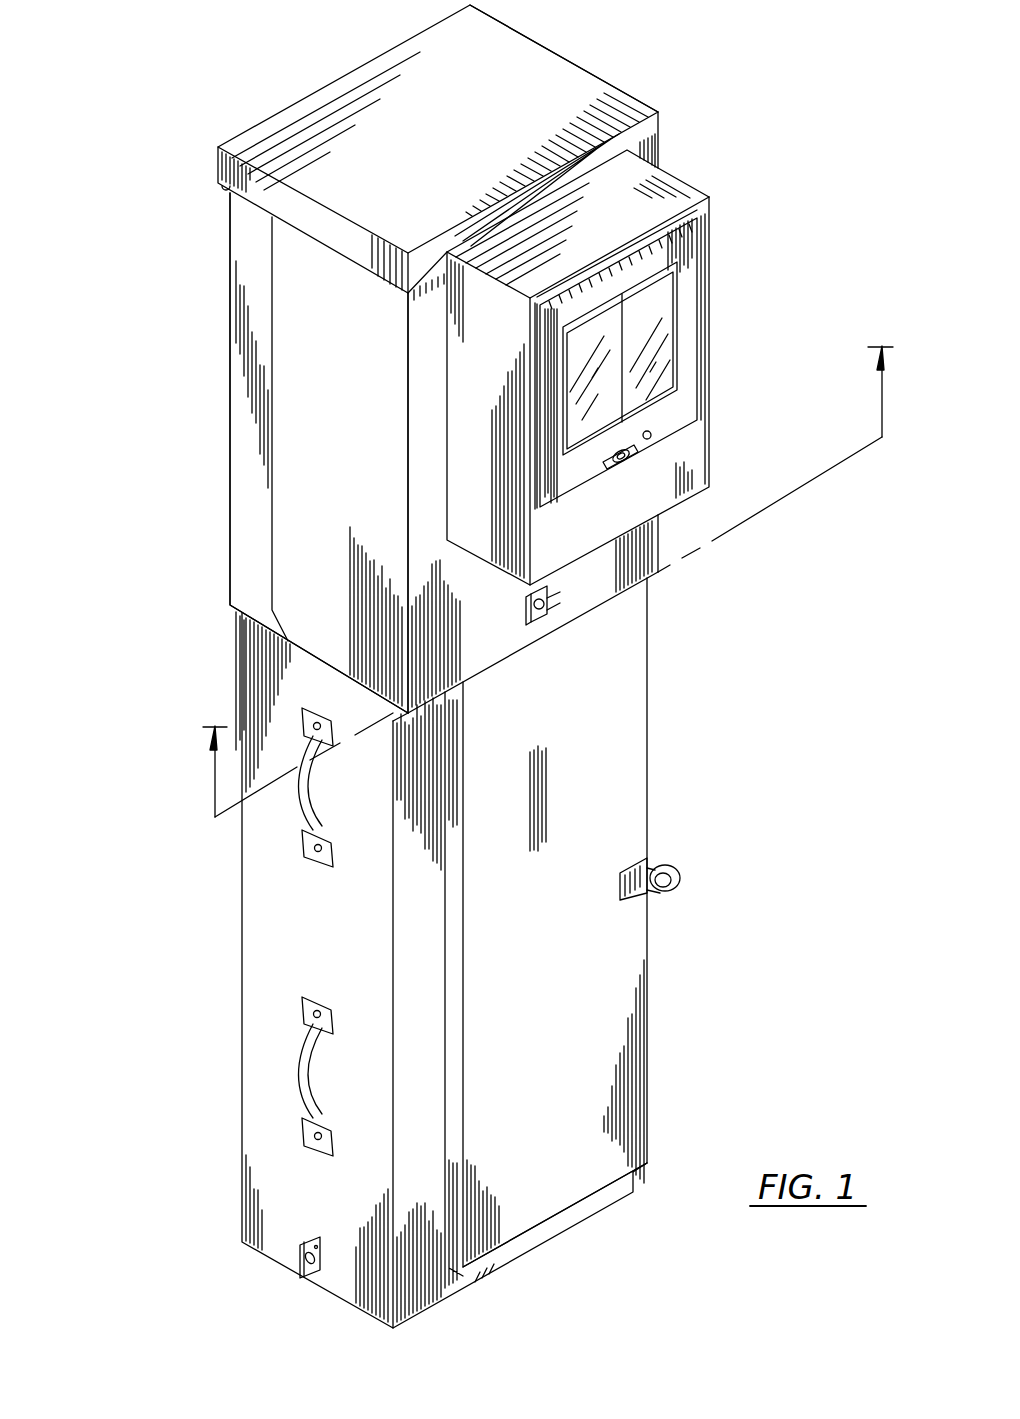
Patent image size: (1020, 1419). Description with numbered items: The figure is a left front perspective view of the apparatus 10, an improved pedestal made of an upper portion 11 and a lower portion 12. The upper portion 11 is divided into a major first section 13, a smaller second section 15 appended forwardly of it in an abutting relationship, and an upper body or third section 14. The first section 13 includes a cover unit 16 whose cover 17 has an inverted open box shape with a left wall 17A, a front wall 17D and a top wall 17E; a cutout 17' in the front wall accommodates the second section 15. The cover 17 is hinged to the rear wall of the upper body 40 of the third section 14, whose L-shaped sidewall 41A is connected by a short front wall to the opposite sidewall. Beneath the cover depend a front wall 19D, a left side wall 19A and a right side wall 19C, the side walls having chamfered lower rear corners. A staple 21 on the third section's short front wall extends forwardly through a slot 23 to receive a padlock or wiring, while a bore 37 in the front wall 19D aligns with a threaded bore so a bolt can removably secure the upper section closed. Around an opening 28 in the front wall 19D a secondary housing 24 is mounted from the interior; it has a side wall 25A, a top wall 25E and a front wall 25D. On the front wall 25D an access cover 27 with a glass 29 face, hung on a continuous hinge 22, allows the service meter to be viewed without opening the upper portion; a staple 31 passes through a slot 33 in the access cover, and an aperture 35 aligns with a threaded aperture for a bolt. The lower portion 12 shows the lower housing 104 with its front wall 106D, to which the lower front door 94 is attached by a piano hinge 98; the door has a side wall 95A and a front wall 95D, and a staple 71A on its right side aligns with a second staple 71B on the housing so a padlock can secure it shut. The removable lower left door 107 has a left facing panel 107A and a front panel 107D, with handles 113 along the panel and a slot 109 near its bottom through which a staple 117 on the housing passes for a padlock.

The apparatus 10 is at (720, 762).
The upper portion 11 is at (150, 389).
The lower portion 12 is at (216, 1116).
The first section 13 is at (610, 70).
The third section 14 is at (214, 428).
The second section 15 is at (758, 334).
The cover unit 16 is at (292, 48).
The cover 17 is at (461, 152).
The left wall 17A is at (268, 203).
The front wall 17D is at (646, 146).
The top wall 17E is at (562, 118).
The cutout 17' is at (699, 163).
The left side wall 19A is at (344, 427).
The right side wall 19C is at (655, 522).
The depending front wall 19D is at (480, 613).
The staple 21 is at (538, 618).
The continuous hinge 22 is at (713, 210).
The slot 23 is at (535, 625).
The secondary housing 24 is at (730, 375).
The side wall 25A is at (495, 367).
The front wall 25D is at (622, 529).
The top wall 25E is at (642, 220).
The access cover 27 is at (690, 315).
The opening 28 is at (440, 483).
The glass 29 is at (665, 295).
The staple 31 is at (630, 458).
The slot 33 is at (640, 452).
The aperture 35 is at (660, 425).
The bore 37 is at (552, 590).
The upper body 40 is at (214, 322).
The L-shaped sidewall 41A is at (250, 276).
The staple 71A is at (666, 874).
The second staple 71B is at (655, 900).
The lower front door 94 is at (650, 1040).
The side wall 95A is at (470, 1272).
The front wall 95D is at (576, 1047).
The piano hinge 98 is at (440, 872).
The lower housing 104 is at (588, 1206).
The front wall 106D is at (535, 1240).
The lower left door 107 is at (242, 960).
The left facing panel 107A is at (350, 937).
The front panel 107D is at (420, 1310).
The slot 109 is at (318, 1282).
The handle 113 is at (298, 1058).
The staple 117 is at (300, 1262).